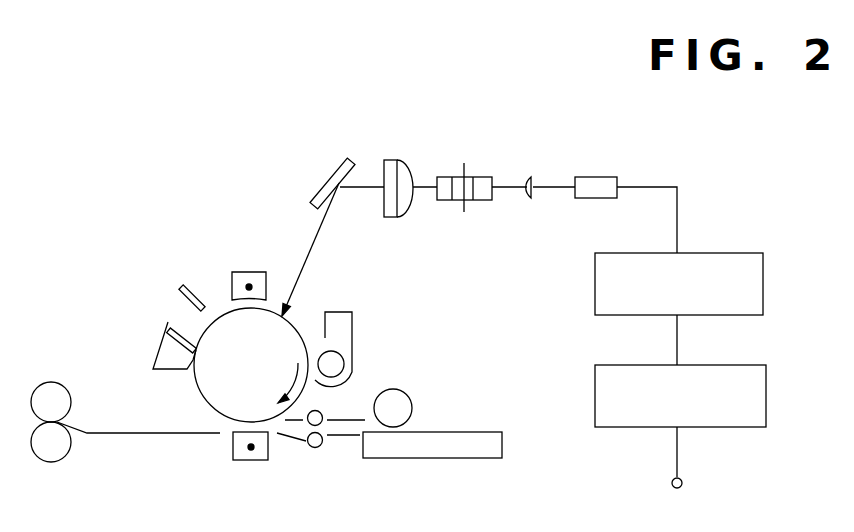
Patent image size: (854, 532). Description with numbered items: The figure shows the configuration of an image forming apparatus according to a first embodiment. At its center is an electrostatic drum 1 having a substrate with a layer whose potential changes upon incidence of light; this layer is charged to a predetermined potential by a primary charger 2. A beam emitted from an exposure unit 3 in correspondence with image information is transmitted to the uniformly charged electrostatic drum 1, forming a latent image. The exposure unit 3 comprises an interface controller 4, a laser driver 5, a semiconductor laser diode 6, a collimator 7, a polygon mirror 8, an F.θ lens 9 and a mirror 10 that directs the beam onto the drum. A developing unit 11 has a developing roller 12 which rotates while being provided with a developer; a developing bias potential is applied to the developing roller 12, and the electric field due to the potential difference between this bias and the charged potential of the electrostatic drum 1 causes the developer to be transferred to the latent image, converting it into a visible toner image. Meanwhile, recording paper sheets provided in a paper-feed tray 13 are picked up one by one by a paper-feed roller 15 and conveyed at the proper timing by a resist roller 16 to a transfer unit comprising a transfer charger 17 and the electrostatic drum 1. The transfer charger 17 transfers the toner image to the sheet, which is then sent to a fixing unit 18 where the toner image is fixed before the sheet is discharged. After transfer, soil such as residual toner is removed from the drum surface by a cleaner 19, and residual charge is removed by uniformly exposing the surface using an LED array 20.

The electrostatic drum 1 is at (222, 313).
The primary charger 2 is at (243, 272).
The exposure unit 3 is at (496, 226).
The interface controller 4 is at (767, 400).
The laser driver 5 is at (764, 283).
The semiconductor laser diode 6 is at (588, 177).
The collimator 7 is at (529, 177).
The polygon mirror 8 is at (481, 177).
The F.θ lens 9 is at (390, 160).
The mirror 10 is at (331, 178).
The developing unit 11 is at (353, 318).
The developing roller 12 is at (344, 361).
The paper-feed tray 13 is at (427, 459).
The paper-feed roller 15 is at (412, 400).
The resist roller 16 is at (315, 449).
The transfer charger 17 is at (250, 461).
The fixing unit 18 is at (52, 463).
The cleaner 19 is at (153, 344).
The LED array 20 is at (182, 291).